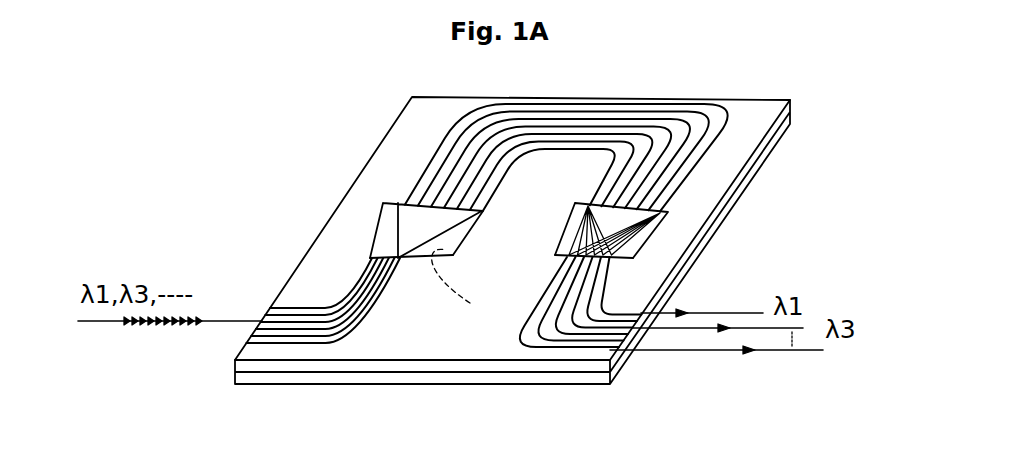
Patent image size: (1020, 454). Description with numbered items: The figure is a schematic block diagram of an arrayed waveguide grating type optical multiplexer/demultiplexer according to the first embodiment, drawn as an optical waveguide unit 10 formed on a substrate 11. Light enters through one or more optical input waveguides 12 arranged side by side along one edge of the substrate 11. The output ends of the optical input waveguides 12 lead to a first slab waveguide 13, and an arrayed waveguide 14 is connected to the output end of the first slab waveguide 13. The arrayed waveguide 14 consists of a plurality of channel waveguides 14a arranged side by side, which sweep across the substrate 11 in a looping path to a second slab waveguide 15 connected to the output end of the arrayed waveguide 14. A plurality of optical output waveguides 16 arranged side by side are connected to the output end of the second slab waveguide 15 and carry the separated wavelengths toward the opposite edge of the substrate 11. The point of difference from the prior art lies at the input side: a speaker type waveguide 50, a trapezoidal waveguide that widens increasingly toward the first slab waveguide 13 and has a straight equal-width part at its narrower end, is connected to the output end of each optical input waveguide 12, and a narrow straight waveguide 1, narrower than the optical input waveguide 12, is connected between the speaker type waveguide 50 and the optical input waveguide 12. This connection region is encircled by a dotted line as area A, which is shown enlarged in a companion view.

The narrow straight waveguide 1 is at (368, 262).
The optical waveguide unit 10 is at (790, 106).
The substrate 11 is at (787, 130).
The optical input waveguide 12 is at (303, 307).
The first slab waveguide 13 is at (378, 212).
The arrayed waveguide 14 is at (540, 84).
The channel waveguide 14a is at (420, 180).
The second slab waveguide 15 is at (670, 216).
The optical output waveguide 16 is at (540, 335).
The speaker type waveguide 50 is at (368, 260).
The area A is at (460, 284).